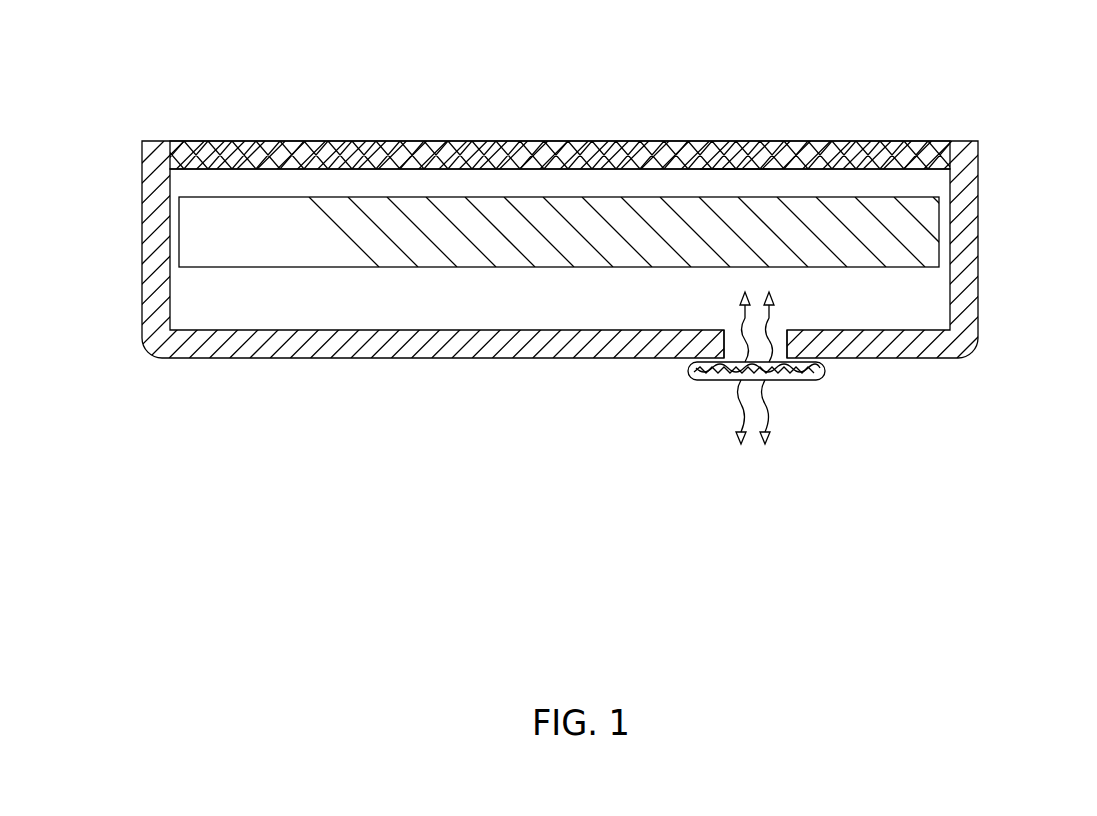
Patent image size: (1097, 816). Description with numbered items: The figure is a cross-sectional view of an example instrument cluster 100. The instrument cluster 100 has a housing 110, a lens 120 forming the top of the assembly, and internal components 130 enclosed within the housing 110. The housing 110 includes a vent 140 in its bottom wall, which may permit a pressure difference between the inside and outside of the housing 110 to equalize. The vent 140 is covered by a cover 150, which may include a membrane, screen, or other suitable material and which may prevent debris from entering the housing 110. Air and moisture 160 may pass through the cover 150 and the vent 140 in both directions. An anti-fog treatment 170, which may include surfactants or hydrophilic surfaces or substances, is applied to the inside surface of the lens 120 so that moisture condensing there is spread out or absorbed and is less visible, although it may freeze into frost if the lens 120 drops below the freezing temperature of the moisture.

The instrument cluster 100 is at (210, 443).
The housing 110 is at (978, 210).
The lens 120 is at (847, 141).
The internal components 130 is at (215, 197).
The vent 140 is at (781, 322).
The cover 150 is at (826, 376).
The air and moisture 160 is at (750, 404).
The anti-fog treatment 170 is at (722, 173).